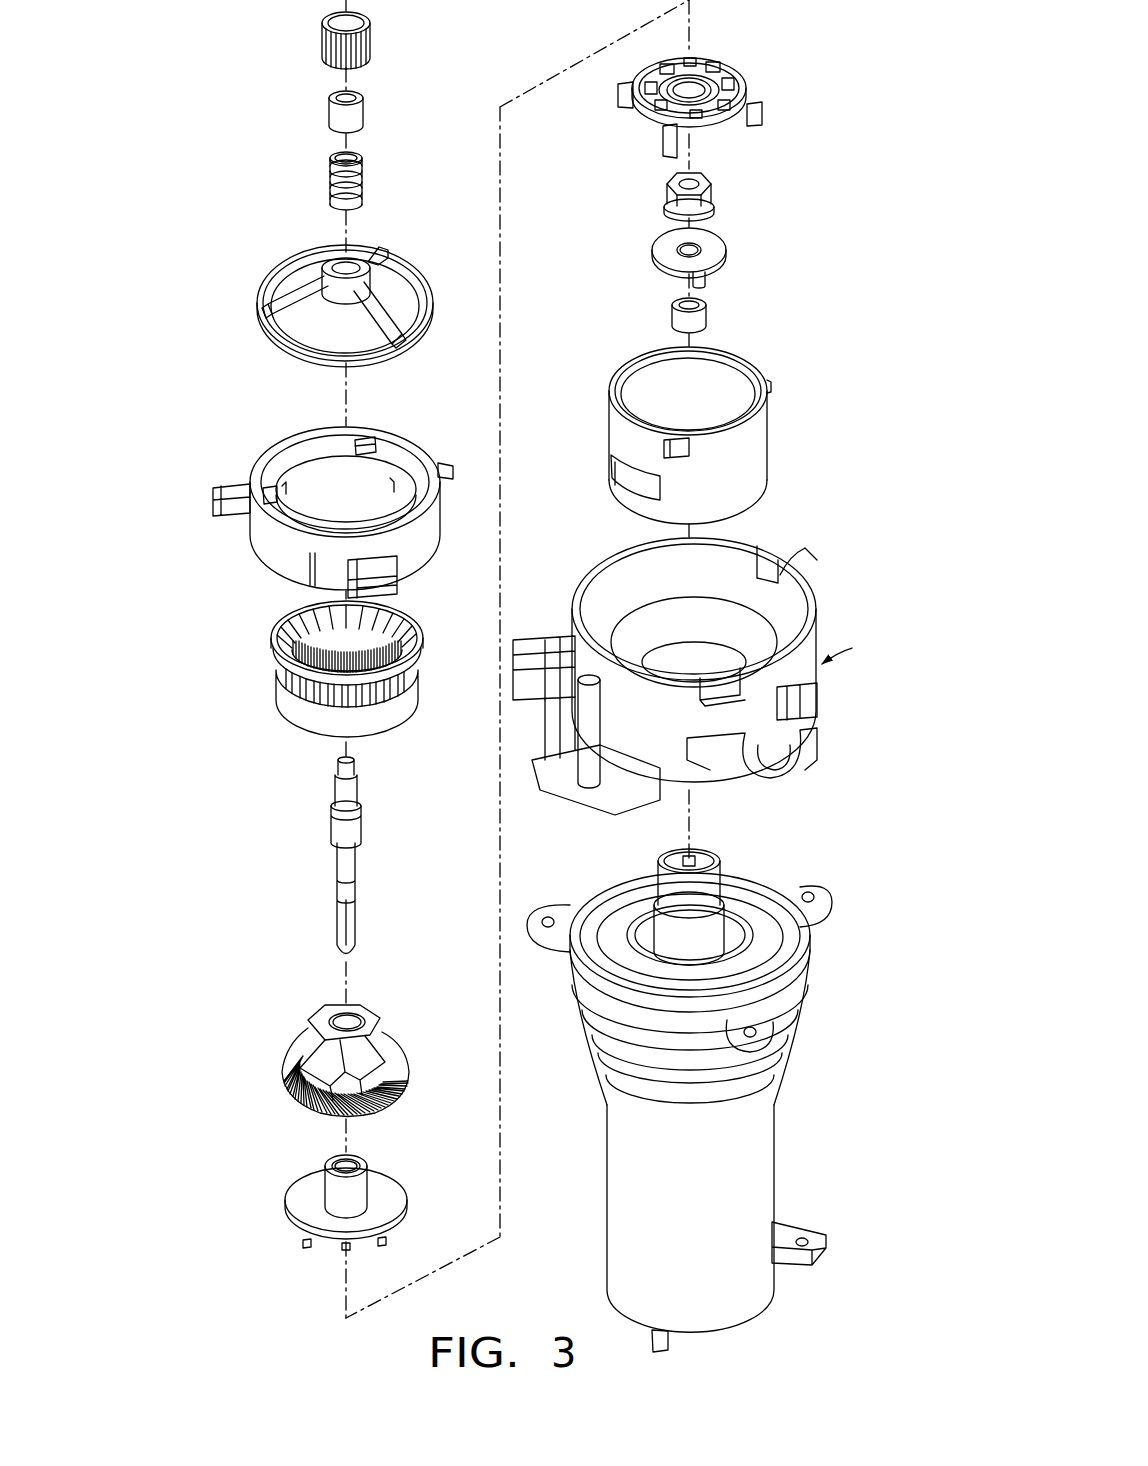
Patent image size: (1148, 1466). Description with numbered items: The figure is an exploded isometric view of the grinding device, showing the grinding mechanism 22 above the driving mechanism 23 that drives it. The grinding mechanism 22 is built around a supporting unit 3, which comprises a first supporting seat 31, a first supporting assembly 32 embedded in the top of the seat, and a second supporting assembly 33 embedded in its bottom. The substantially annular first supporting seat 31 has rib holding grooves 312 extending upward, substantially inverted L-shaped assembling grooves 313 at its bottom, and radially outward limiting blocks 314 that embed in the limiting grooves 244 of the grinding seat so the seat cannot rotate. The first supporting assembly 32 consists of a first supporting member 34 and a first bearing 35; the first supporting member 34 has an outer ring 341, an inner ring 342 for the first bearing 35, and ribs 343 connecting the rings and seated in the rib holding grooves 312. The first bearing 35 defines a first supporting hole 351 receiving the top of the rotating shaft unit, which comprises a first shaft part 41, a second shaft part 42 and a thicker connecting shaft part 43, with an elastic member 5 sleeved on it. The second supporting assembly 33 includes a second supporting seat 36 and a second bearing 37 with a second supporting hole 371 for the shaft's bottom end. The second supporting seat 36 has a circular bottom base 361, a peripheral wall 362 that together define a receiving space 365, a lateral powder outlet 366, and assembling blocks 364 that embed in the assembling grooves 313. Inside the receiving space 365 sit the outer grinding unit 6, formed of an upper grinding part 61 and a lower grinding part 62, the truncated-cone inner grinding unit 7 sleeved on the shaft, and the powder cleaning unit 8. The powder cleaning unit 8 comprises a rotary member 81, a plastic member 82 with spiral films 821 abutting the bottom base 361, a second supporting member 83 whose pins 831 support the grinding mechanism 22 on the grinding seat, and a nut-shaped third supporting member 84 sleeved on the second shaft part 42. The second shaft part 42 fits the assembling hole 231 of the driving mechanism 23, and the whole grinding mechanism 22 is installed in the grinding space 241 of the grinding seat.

The supporting unit 3 is at (302, 374).
The elastic member 5 is at (365, 168).
The outer grinding unit 6 is at (300, 669).
The inner grinding unit 7 is at (313, 1050).
The powder cleaning unit 8 is at (698, 144).
The grinding mechanism 22 is at (263, 992).
The driving mechanism 23 is at (683, 1088).
The first supporting seat 31 is at (323, 484).
The first supporting assembly 32 is at (308, 293).
The second supporting assembly 33 is at (705, 405).
The first supporting member 34 is at (308, 301).
The first bearing 35 is at (339, 103).
The second supporting seat 36 is at (688, 423).
The second bearing 37 is at (696, 304).
The first shaft part 41 is at (347, 792).
The second shaft part 42 is at (305, 898).
The connecting shaft part 43 is at (347, 822).
The upper grinding part 61 is at (305, 630).
The lower grinding part 62 is at (292, 683).
The rotary member 81 is at (305, 1198).
The plastic member 82 is at (698, 110).
The second supporting member 83 is at (694, 242).
The third supporting member 84 is at (670, 192).
The assembling hole 231 is at (722, 866).
The grinding space 241 is at (702, 659).
The limiting grooves 244 is at (843, 729).
The rib holding grooves 312 is at (366, 440).
The assembling grooves 313 is at (310, 462).
The limiting blocks 314 is at (441, 472).
The outer ring 341 is at (278, 288).
The inner ring 342 is at (320, 333).
The ribs 343 is at (384, 248).
The first supporting hole 351 is at (337, 101).
The bottom base 361 is at (740, 506).
The peripheral wall 362 is at (742, 463).
The assembling blocks 364 is at (770, 381).
The receiving space 365 is at (732, 392).
The powder outlet 366 is at (630, 465).
The second supporting hole 371 is at (679, 303).
The films 821 is at (624, 98).
The pins 831 is at (655, 260).